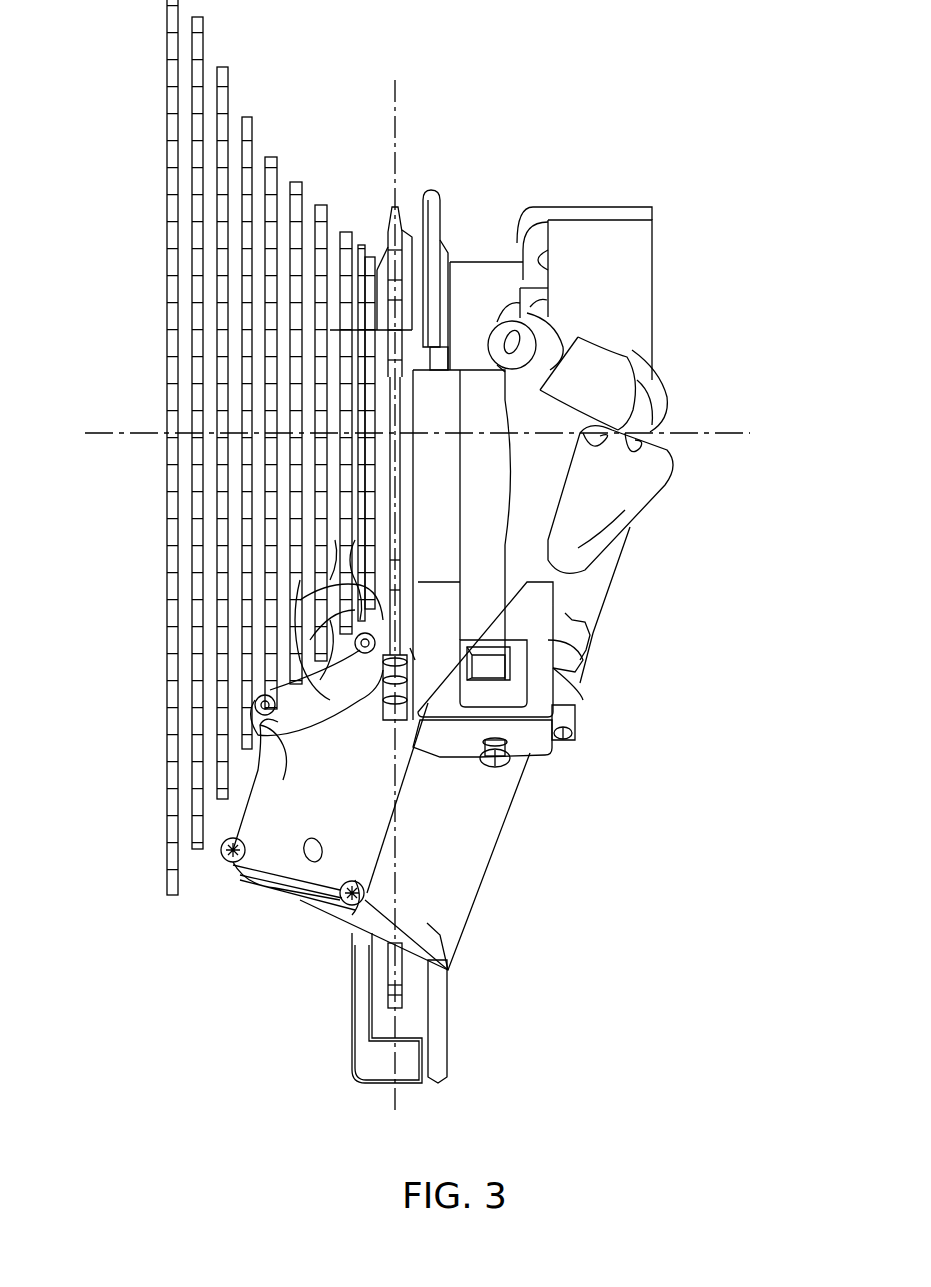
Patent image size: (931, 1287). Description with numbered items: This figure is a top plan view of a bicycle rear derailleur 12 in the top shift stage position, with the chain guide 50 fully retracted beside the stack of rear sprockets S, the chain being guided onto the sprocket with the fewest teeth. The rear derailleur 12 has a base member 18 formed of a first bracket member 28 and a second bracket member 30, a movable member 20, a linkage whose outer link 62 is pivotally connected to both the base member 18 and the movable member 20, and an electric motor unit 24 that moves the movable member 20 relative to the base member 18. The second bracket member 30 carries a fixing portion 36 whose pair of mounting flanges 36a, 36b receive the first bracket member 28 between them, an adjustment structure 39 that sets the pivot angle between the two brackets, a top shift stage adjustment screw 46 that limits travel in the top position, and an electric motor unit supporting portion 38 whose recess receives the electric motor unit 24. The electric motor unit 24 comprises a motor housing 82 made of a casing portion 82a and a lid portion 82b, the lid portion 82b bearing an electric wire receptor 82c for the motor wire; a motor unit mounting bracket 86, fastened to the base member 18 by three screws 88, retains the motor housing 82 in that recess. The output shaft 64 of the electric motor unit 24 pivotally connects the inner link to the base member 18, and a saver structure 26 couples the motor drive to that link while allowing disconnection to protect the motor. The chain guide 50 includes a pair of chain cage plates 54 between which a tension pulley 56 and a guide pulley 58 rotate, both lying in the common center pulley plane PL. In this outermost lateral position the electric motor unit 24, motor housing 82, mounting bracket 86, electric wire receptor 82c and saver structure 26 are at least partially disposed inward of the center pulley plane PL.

The rear sprockets S is at (318, 70).
The center pulley plane PL is at (396, 107).
The bicycle rear derailleur 12 is at (708, 212).
The movable member 20 is at (662, 303).
The guide pulley 58 is at (392, 212).
The first bracket member 28 is at (515, 557).
The second bracket member 30 is at (565, 595).
The outer link 62 is at (622, 546).
The fixing portion 36 is at (590, 670).
The mounting flange 36a is at (538, 647).
The mounting flange 36b is at (553, 668).
The top shift stage adjustment screw 46 is at (572, 740).
The adjustment structure 39 is at (505, 780).
The electric motor unit supporting portion 38 is at (458, 832).
The base member 18 is at (433, 836).
The chain guide 50 is at (460, 981).
The tension pulley 56 is at (405, 998).
The chain cage plates 54 is at (407, 1087).
The electric motor unit 24 is at (338, 905).
The screws 88 is at (404, 645).
The motor housing 82 is at (282, 807).
The casing portion 82a is at (350, 905).
The lid portion 82b is at (282, 887).
The electric wire receptor 82c is at (370, 690).
The motor unit mounting bracket 86 is at (250, 791).
The saver structure 26 is at (279, 791).
The output shaft 64 is at (323, 700).